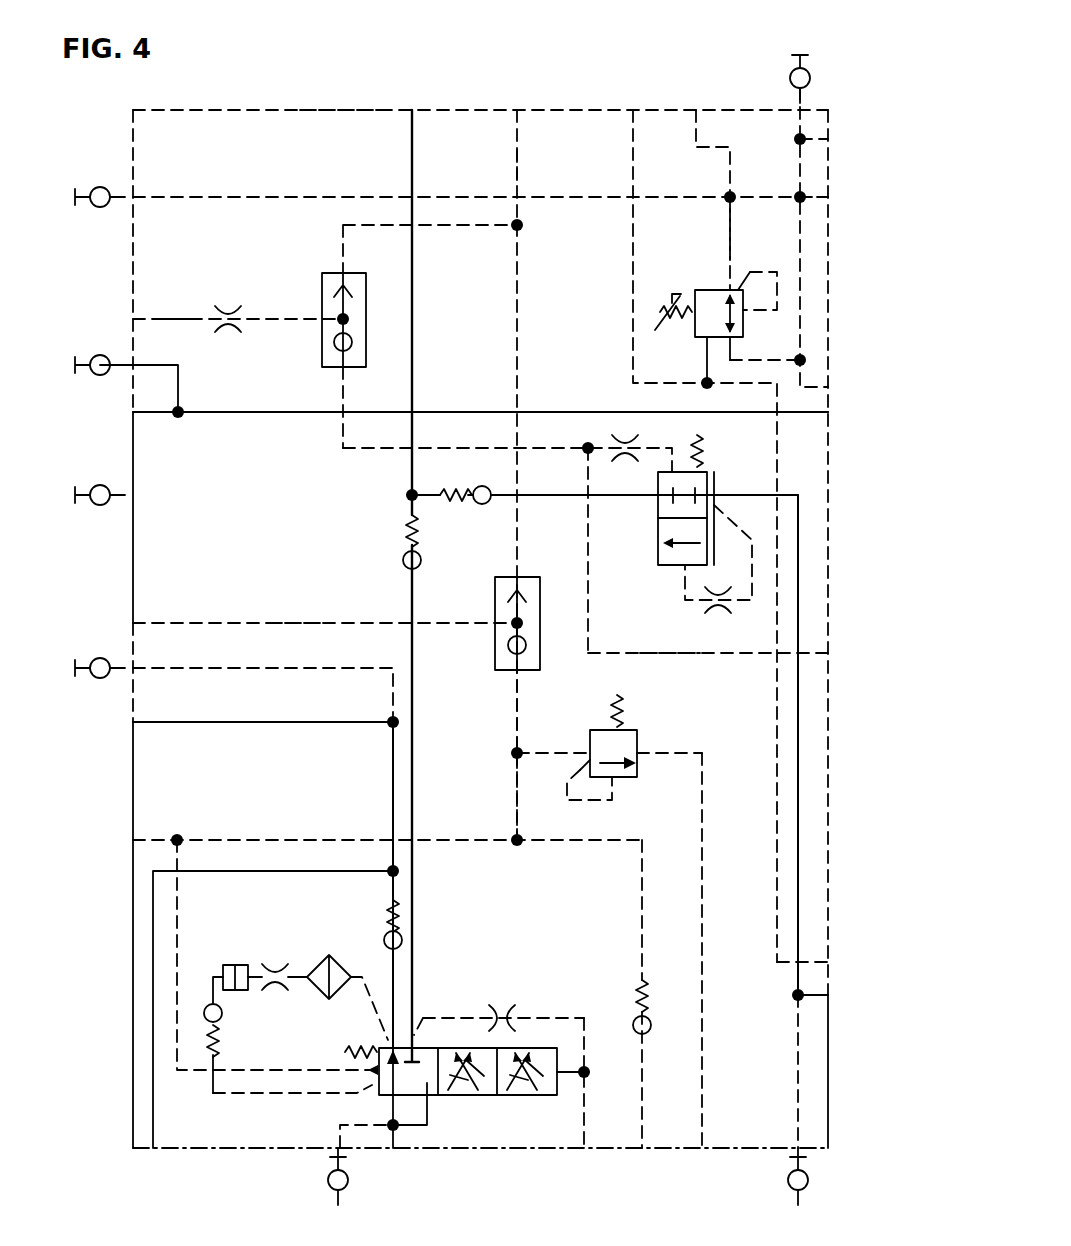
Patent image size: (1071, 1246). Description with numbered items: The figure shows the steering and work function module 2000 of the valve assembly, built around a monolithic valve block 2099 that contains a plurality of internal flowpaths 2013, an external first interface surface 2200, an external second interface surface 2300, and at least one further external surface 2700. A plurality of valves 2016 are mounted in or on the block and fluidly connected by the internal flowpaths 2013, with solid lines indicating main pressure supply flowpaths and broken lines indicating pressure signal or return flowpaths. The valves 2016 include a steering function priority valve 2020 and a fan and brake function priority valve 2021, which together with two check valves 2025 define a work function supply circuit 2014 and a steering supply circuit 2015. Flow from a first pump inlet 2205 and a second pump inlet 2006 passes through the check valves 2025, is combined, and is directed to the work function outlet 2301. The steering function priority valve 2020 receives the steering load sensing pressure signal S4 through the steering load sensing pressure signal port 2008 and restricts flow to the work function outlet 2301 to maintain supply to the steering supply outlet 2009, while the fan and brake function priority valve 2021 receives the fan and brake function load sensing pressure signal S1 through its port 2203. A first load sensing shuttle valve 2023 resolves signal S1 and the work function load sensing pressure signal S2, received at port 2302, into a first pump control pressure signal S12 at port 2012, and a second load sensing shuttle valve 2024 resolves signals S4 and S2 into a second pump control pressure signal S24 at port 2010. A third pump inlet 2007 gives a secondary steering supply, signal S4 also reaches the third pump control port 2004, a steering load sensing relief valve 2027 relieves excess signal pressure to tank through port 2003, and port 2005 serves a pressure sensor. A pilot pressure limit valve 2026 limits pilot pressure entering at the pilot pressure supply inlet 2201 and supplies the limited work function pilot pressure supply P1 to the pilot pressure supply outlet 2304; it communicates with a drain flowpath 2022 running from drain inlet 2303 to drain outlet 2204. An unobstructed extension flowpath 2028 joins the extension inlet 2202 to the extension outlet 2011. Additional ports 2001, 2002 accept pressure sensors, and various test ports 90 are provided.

The steering and work function module 2000 is at (308, 83).
The second interface surface 2300 is at (247, 110).
The further external surface 2700 is at (133, 796).
The first interface surface 2200 is at (828, 782).
The monolithic valve block 2099 is at (337, 112).
The work function outlet 2301 is at (416, 110).
The work function supply circuit 2014 is at (437, 378).
The check valves 2025 is at (484, 510).
The work function load sensing pressure signal port 2302 is at (517, 110).
The work function load sensing pressure signal S2 is at (517, 164).
The drain inlet 2303 is at (633, 110).
The pilot pressure supply outlet 2304 is at (696, 110).
The work function pilot pressure supply P1 is at (730, 240).
The drain flowpath 2022 is at (777, 855).
The first pump inlet 2205 is at (828, 995).
The drain outlet 2204 is at (828, 962).
The fan and brake function load sensing pressure signal port 2203 is at (828, 653).
The fan and brake function load sensing pressure signal S1 is at (660, 654).
The extension flowpath 2028 is at (535, 413).
The test ports 90 is at (804, 90).
The additional port 2001 is at (832, 140).
The additional port 2002 is at (832, 197).
The pilot pressure supply inlet 2201 is at (828, 387).
The internal flowpaths 2013 is at (255, 182).
The valves 2016 is at (343, 160).
The first pump control pressure signal port 2012 is at (133, 319).
The first pump control pressure signal S12 is at (176, 317).
The first load sensing shuttle valve 2023 is at (322, 292).
The extension outlet 2011 is at (133, 412).
The extension inlet 2202 is at (828, 412).
The second pump control pressure signal port 2010 is at (133, 623).
The second pump control pressure signal S24 is at (290, 623).
The steering supply outlet 2009 is at (133, 722).
The steering load sensing pressure signal port 2008 is at (133, 840).
The steering load sensing pressure signal S4 is at (173, 836).
The steering supply circuit 2015 is at (377, 828).
The third pump inlet 2007 is at (153, 1148).
The pilot pressure limit valve 2026 is at (698, 343).
The fan and brake function priority valve 2021 is at (652, 560).
The second load sensing shuttle valve 2024 is at (492, 664).
The steering load sensing relief valve 2027 is at (640, 744).
The port 2003 is at (701, 1148).
The third pump control port 2004 is at (642, 1148).
The port 2005 is at (584, 1148).
The second pump inlet 2006 is at (393, 1148).
The steering function priority valve 2020 is at (470, 1100).